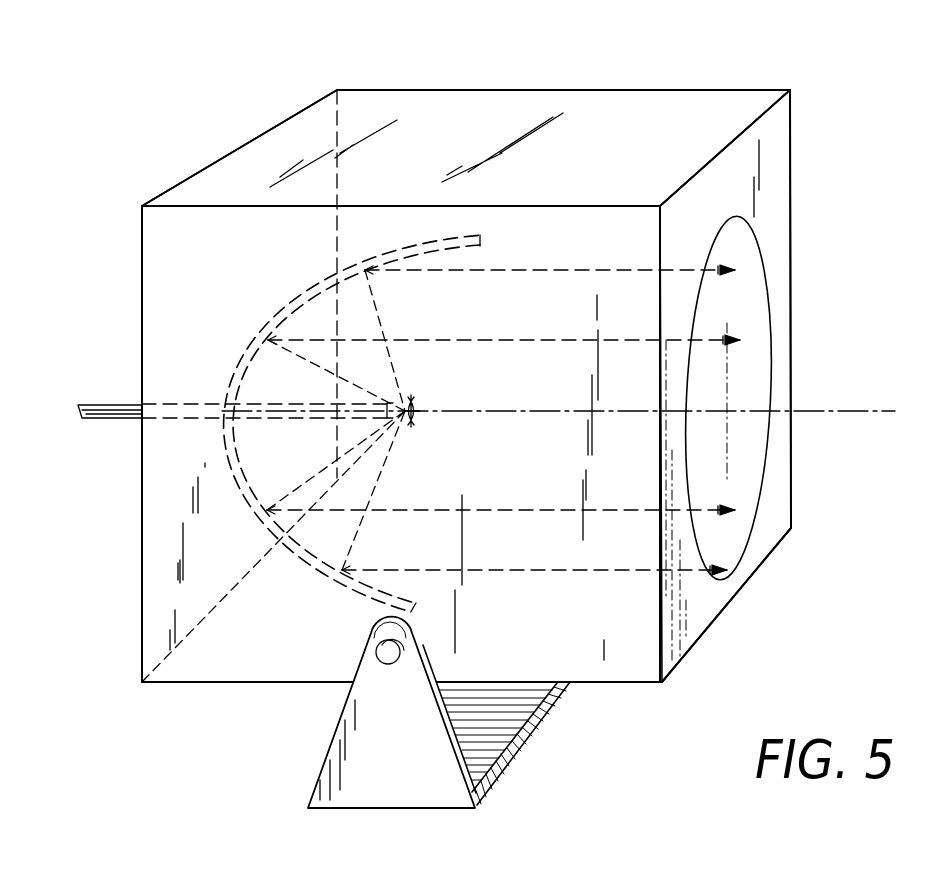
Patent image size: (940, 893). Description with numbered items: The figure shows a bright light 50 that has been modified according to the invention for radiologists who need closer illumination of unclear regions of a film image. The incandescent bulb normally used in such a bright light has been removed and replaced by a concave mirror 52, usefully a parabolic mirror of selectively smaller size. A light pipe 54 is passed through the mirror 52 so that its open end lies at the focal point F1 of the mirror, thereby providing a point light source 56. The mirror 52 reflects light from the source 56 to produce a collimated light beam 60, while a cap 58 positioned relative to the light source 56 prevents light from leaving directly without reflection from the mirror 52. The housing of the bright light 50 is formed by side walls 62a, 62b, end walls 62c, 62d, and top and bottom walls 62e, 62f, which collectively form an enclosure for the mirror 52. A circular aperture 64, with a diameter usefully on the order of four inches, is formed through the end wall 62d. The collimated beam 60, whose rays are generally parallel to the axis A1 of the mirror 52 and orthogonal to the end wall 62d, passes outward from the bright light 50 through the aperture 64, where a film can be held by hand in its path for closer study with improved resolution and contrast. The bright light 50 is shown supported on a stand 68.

The bright light 50 is at (752, 592).
The concave mirror 52 is at (283, 300).
The light pipe 54 is at (100, 404).
The point light source 56 is at (407, 404).
The cap 58 is at (415, 422).
The collimated light beam 60 is at (552, 570).
The side wall 62a is at (242, 262).
The side wall 62b is at (532, 96).
The end wall 62c is at (200, 538).
The end wall 62d is at (780, 505).
The top wall 62e is at (627, 167).
The bottom wall 62f is at (607, 650).
The circular aperture 64 is at (742, 280).
The stand 68 is at (355, 727).
The focal point F1 is at (455, 385).
The axis A1 is at (868, 411).